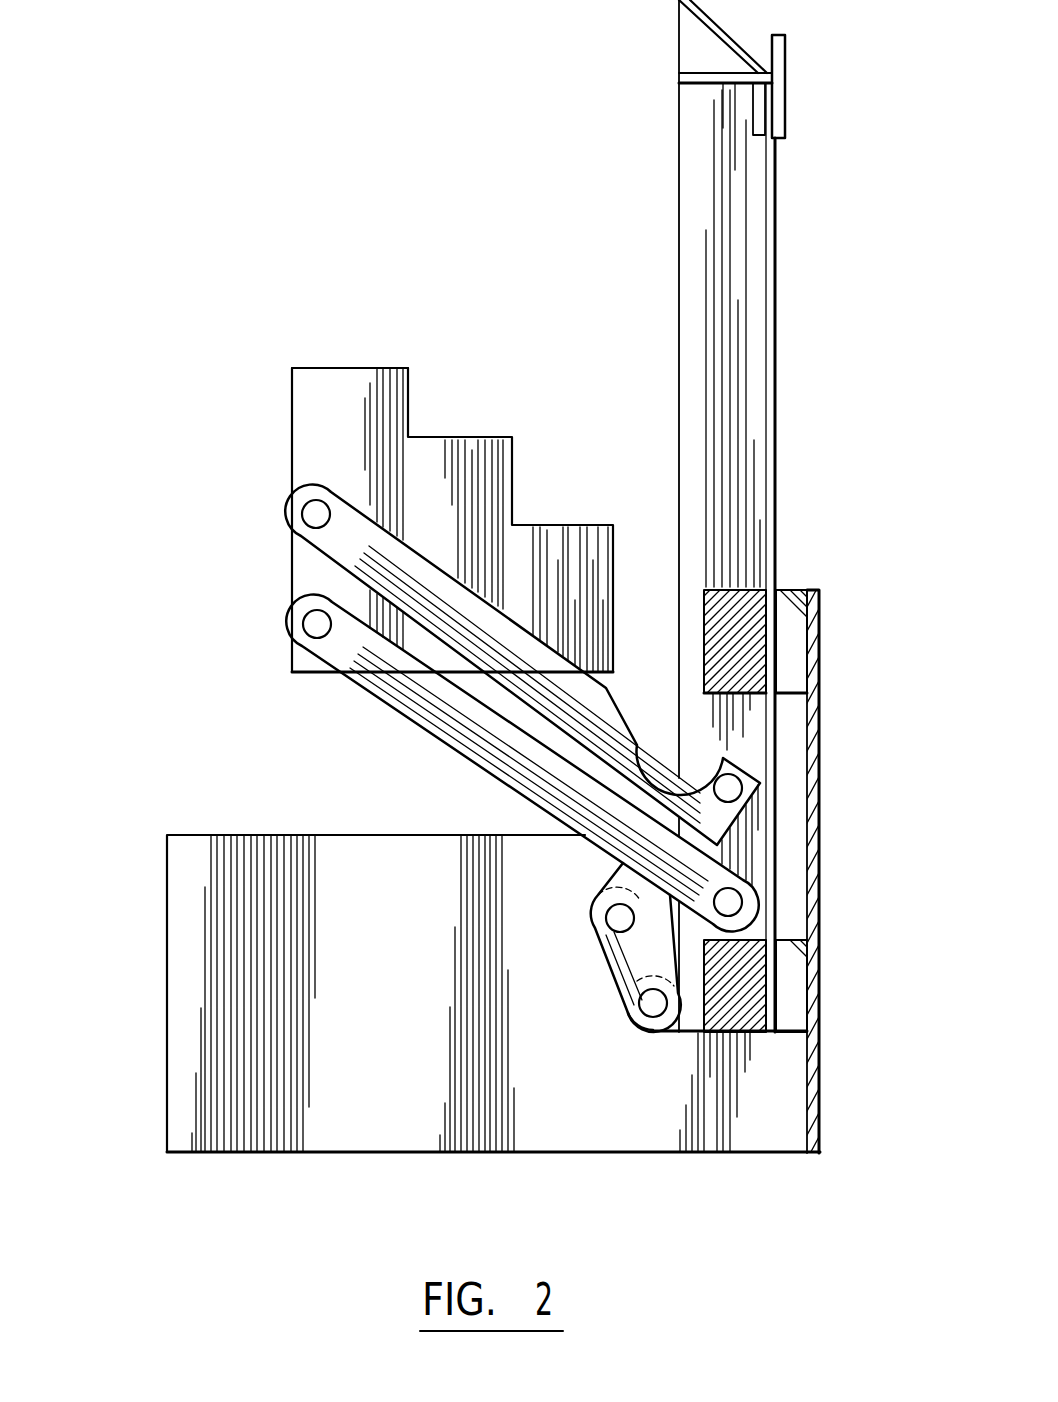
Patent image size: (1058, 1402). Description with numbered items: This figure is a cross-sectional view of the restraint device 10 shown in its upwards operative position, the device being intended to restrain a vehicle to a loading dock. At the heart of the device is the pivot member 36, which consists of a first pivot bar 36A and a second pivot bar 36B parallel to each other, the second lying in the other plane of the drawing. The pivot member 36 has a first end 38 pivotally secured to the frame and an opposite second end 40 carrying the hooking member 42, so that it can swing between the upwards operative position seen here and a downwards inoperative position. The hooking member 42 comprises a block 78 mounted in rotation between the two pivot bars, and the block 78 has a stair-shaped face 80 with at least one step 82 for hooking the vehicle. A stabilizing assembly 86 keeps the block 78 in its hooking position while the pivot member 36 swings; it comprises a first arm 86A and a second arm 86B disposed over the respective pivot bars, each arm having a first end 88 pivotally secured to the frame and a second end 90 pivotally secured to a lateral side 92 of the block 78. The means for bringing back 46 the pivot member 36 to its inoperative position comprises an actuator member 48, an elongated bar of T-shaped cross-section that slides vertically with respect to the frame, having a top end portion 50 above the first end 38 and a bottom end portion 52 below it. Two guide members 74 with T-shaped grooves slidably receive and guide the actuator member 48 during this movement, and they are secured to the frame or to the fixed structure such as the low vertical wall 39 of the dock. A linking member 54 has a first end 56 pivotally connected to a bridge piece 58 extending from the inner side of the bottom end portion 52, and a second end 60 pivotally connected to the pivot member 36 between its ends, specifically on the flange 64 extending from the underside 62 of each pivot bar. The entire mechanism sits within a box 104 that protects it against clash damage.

The restraint device 10 is at (382, 158).
The pivot member 36 is at (332, 707).
The first pivot bar 36A is at (539, 762).
The second pivot bar 36B is at (447, 735).
The first end 38 is at (782, 878).
The side wall plate 39 is at (815, 735).
The second end 40 is at (303, 630).
The hooking member 42 is at (280, 411).
The means for bringing back 46 is at (826, 354).
The actuator member 48 is at (782, 230).
The top end portion 50 is at (816, 81).
The bottom end portion 52 is at (692, 1036).
The linking member 54 is at (604, 972).
The first end 56 is at (633, 1022).
The bridge piece 58 is at (650, 1040).
The second end 60 is at (599, 899).
The underside 62 is at (497, 778).
The flange 64 is at (605, 877).
The guide member 74 is at (790, 638).
The block 78 is at (330, 366).
The stair-shaped face 80 is at (536, 390).
The step 82 is at (452, 436).
The stabilizing assembly 86 is at (641, 669).
The first arm 86A is at (557, 664).
The second arm 86B is at (642, 757).
The first end 88 is at (742, 822).
The second end 90 is at (305, 518).
The lateral side 92 is at (302, 457).
The box 104 is at (135, 1071).